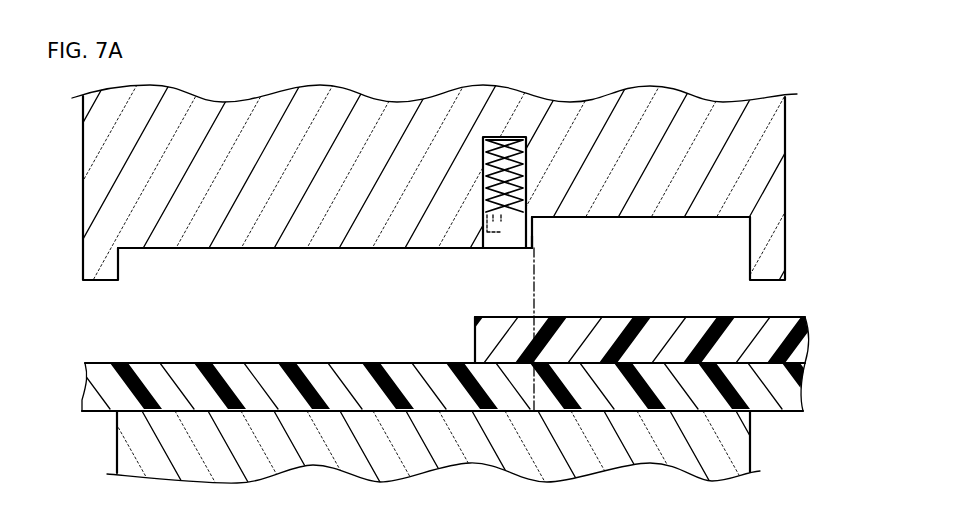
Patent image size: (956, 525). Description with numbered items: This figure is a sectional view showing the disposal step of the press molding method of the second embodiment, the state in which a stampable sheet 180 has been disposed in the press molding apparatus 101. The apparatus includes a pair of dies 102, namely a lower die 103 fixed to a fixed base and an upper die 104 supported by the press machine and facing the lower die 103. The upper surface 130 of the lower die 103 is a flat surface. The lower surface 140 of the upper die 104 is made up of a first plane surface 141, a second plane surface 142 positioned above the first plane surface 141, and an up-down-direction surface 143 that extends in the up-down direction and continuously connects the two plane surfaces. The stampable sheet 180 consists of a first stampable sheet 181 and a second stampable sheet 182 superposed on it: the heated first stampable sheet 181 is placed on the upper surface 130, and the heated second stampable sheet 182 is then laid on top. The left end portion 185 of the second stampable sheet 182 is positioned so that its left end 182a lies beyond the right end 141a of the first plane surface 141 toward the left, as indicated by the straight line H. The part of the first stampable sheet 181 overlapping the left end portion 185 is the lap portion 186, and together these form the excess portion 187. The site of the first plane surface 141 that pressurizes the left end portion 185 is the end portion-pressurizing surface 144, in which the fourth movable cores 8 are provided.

The press molding apparatus 101 is at (785, 199).
The dies 102 is at (478, 275).
The lower die 103 is at (457, 461).
The upper die 104 is at (278, 143).
The fourth movable cores 8 is at (486, 232).
The lower surface 140 is at (227, 248).
The first plane surface 141 is at (284, 260).
The right end of the first plane surface 141a is at (534, 252).
The second plane surface 142 is at (660, 227).
The up-down-direction surface 143 is at (534, 228).
The end portion-pressurizing surface 144 is at (532, 250).
The stampable sheet 180 is at (472, 402).
The first stampable sheet 181 is at (301, 362).
The second stampable sheet 182 is at (666, 328).
The left end of the second stampable sheet 182a is at (475, 340).
The upper surface 130 is at (267, 393).
The left end portion 185 is at (504, 365).
The lap portion 186 is at (503, 342).
The excess portion 187 is at (477, 450).
The straight line H is at (536, 300).